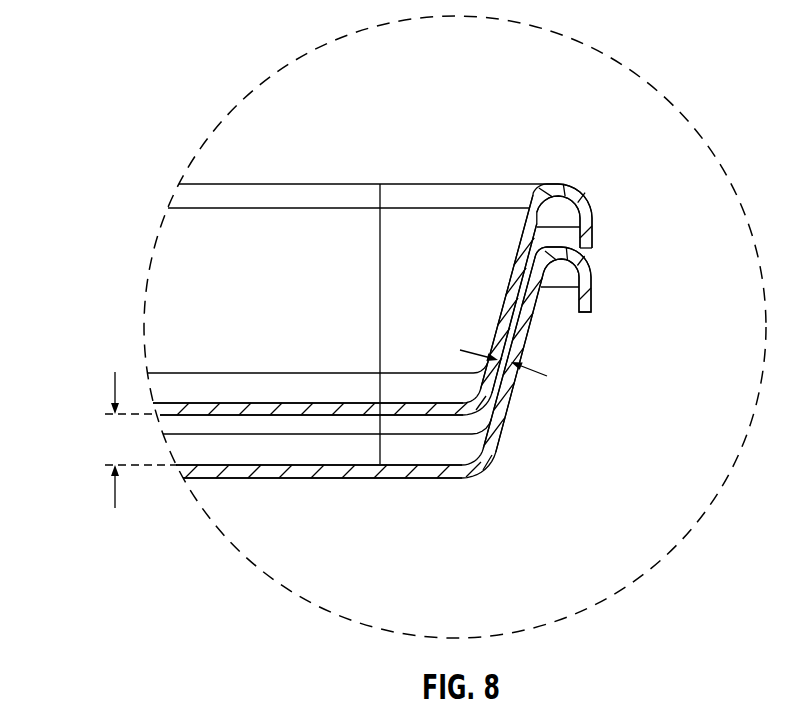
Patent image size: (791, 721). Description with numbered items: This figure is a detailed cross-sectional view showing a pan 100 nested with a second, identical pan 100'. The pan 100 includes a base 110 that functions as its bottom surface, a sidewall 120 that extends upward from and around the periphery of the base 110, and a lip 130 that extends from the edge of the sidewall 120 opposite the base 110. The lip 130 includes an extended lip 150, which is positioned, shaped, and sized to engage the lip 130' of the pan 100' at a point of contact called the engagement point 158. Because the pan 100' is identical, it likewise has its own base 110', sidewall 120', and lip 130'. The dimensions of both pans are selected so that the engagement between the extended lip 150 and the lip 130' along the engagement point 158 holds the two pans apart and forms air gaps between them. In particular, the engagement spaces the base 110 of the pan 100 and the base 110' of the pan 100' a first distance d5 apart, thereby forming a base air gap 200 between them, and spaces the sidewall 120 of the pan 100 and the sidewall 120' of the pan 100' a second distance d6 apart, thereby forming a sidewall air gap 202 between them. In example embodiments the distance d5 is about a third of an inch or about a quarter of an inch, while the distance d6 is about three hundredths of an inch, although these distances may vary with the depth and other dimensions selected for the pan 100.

The pan 100 is at (372, 243).
The base 110 is at (319, 367).
The sidewall 120 is at (477, 294).
The lip 130 is at (575, 180).
The extended lip 150 is at (610, 231).
The engagement point 158 is at (586, 249).
The lip 130' is at (566, 296).
The sidewall 120' is at (550, 354).
The pan 100' is at (387, 366).
The base 110' is at (334, 509).
The base air gap 200 is at (350, 457).
The sidewall air gap 202 is at (504, 326).
The distance d5 is at (115, 485).
The distance d6 is at (535, 375).